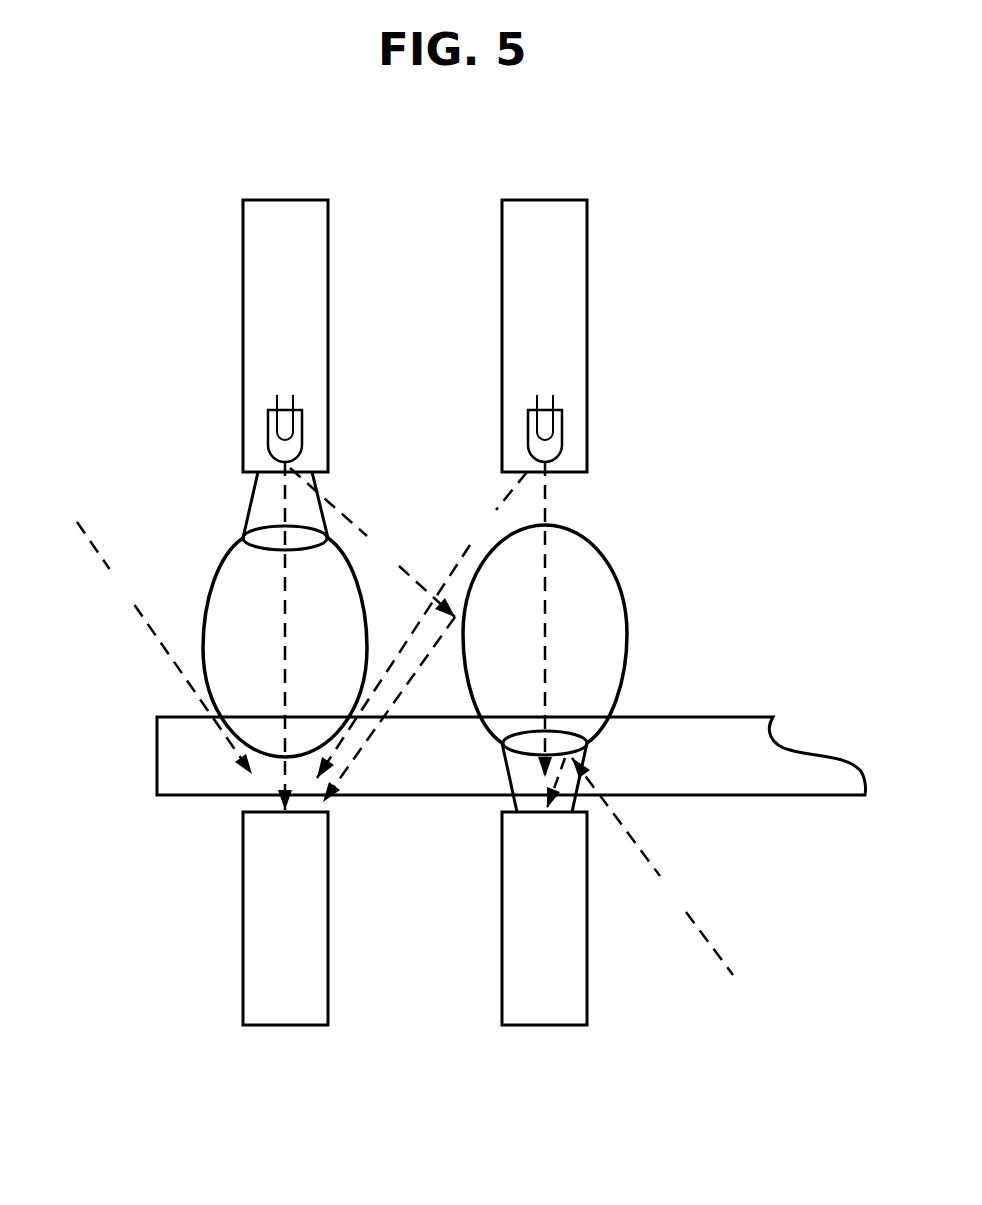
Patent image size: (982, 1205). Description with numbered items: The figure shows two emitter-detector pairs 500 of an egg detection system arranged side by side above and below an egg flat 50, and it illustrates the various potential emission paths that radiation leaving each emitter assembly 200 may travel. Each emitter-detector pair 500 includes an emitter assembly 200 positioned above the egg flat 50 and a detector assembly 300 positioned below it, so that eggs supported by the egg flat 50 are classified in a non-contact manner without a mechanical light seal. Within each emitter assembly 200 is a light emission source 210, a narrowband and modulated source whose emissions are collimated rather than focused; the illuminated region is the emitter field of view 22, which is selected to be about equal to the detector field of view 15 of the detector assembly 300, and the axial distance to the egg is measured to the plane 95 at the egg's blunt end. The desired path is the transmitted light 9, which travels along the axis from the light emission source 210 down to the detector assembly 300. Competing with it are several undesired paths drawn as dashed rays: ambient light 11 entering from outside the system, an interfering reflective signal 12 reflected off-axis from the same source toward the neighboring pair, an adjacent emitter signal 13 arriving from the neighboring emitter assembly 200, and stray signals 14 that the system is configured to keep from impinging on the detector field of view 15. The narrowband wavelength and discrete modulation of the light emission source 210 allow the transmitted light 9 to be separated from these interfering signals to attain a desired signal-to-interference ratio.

The emitter assembly 200 is at (270, 254).
The light emission source 210 is at (290, 452).
The emitter field of view 22 is at (268, 540).
The plane of the egg at the blunt end 95 is at (545, 525).
The detector field of view 15 is at (577, 738).
The transmitted light 9 is at (415, 636).
The ambient light signal 11 is at (164, 648).
The interfering reflective signal 12 is at (372, 635).
The adjacent emitter signal 13 is at (422, 625).
The signals impinging on detector field of view 14 is at (652, 866).
The egg flat 50 is at (750, 735).
The detector assembly 300 is at (270, 918).
The emitter-detector pair 500 is at (764, 352).